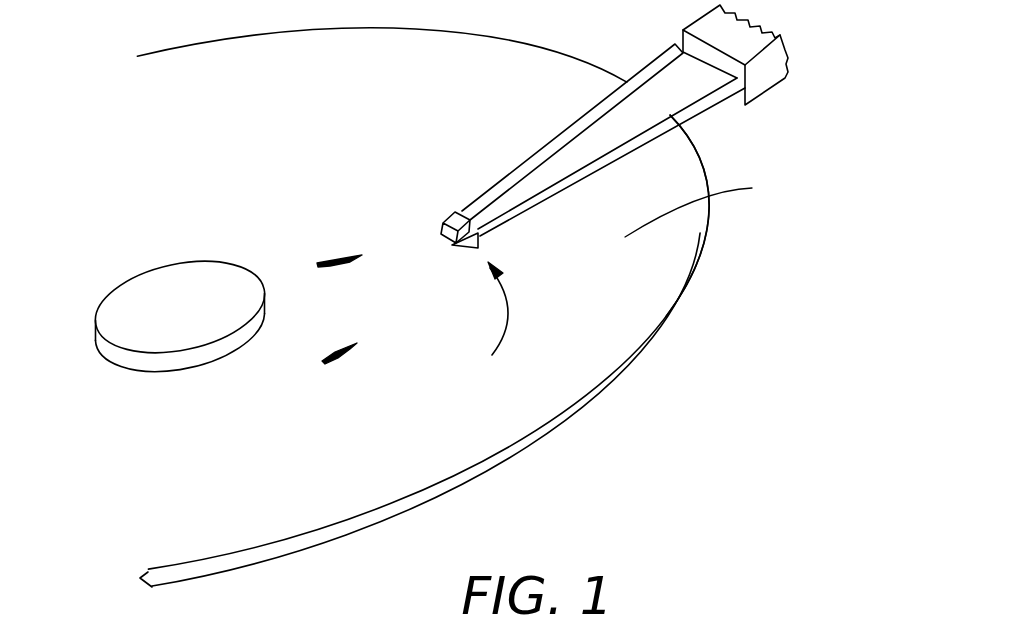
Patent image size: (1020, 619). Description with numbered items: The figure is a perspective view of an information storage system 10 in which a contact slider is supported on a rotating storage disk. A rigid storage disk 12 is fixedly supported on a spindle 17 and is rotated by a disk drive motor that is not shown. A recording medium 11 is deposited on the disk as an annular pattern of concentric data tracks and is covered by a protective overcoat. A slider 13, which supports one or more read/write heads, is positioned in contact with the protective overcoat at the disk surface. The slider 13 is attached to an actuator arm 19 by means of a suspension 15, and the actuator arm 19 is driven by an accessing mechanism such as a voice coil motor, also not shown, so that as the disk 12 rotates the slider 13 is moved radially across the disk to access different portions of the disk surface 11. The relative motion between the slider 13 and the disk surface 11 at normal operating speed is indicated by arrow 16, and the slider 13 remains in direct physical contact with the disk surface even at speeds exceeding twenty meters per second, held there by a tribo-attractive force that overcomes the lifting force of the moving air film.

The magnetic disk 10 is at (620, 453).
The recording medium 11 is at (707, 206).
The rigid storage disk 12 is at (705, 227).
The slider 13 is at (480, 236).
The suspension 15 is at (700, 110).
The arrow 16 is at (508, 312).
The spindle 17 is at (168, 315).
The actuator arm 19 is at (788, 60).